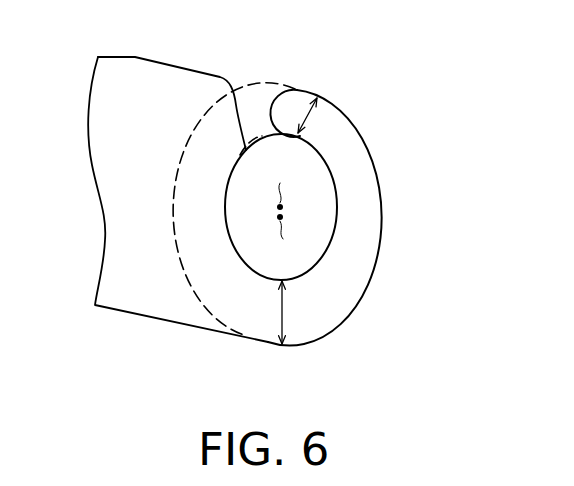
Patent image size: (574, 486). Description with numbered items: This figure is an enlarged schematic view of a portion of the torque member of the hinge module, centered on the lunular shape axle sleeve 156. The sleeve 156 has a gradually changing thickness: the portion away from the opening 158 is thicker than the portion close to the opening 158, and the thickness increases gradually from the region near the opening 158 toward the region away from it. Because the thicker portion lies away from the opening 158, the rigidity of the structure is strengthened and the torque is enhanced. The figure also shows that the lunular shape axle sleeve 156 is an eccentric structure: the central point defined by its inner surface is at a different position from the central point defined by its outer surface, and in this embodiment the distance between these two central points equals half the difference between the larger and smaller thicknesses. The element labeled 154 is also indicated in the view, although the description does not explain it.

The light-emitting ring 154 is at (338, 189).
The lunular shape axle sleeve 156 is at (367, 230).
The opening 158 is at (262, 116).